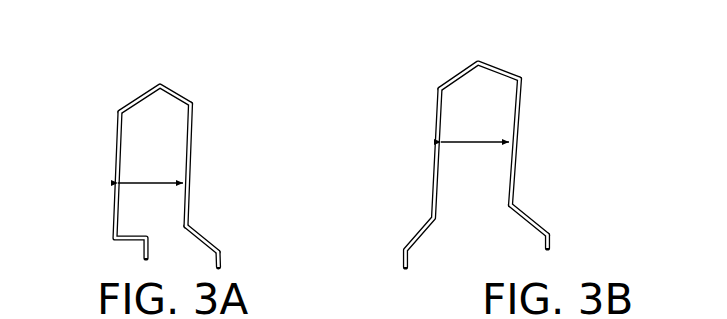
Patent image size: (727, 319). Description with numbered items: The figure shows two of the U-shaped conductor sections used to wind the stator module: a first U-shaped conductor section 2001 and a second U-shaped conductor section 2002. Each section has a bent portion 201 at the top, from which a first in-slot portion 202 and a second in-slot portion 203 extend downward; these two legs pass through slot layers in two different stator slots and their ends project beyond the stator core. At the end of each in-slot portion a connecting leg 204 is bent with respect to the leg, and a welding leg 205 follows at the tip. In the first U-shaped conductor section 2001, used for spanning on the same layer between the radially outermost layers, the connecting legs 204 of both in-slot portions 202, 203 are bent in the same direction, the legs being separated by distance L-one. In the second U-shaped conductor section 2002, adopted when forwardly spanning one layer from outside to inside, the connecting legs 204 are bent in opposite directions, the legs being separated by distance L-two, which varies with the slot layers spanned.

In FIG. 3A, the first U-shaped conductor section 2001 is at (194, 151).
In FIG. 3B, the second U-shaped conductor section 2002 is at (516, 133).
In FIG. 3A, the bent portion 201 is at (163, 90).
In FIG. 3B, the bent portion 201 is at (481, 61).
In FIG. 3A, the first in-slot portion 202 is at (113, 203).
In FIG. 3B, the first in-slot portion 202 is at (437, 170).
In FIG. 3A, the second in-slot portion 203 is at (190, 190).
In FIG. 3B, the second in-slot portion 203 is at (516, 160).
In FIG. 3A, the connecting leg 204 is at (197, 232).
In FIG. 3B, the connecting leg 204 is at (522, 208).
In FIG. 3A, the welding leg 205 is at (224, 263).
In FIG. 3B, the welding leg 205 is at (552, 237).